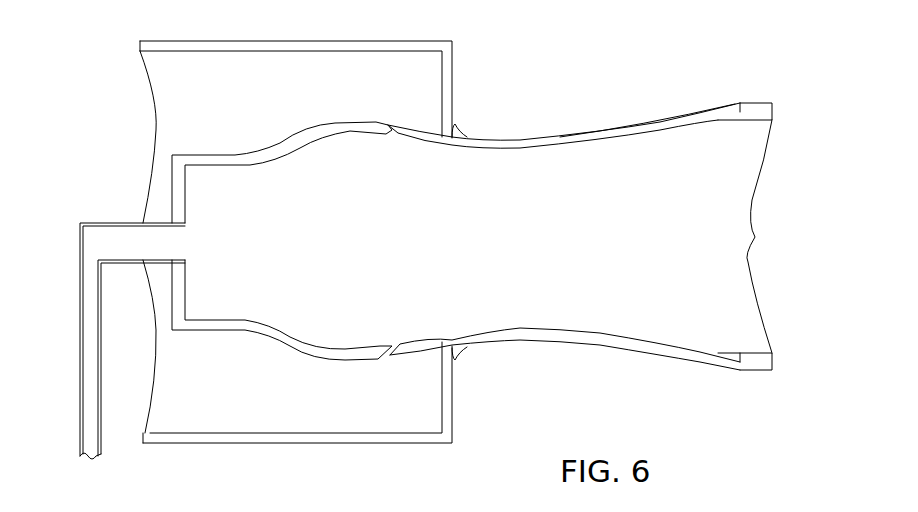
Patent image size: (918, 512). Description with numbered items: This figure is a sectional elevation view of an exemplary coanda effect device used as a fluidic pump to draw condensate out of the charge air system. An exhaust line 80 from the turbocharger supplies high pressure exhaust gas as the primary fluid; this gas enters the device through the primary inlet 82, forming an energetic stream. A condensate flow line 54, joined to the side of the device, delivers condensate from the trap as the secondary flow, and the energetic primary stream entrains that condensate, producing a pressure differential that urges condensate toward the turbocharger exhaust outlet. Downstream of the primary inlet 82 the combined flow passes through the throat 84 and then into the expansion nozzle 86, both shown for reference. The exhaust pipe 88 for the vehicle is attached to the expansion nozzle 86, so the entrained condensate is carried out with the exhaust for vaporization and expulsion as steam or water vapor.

The condensate flow line 54 is at (80, 392).
The exhaust line 80 is at (452, 83).
The primary inlet 82 is at (392, 132).
The throat 84 is at (505, 150).
The expansion nozzle 86 is at (617, 127).
The exhaust pipe 88 is at (758, 103).